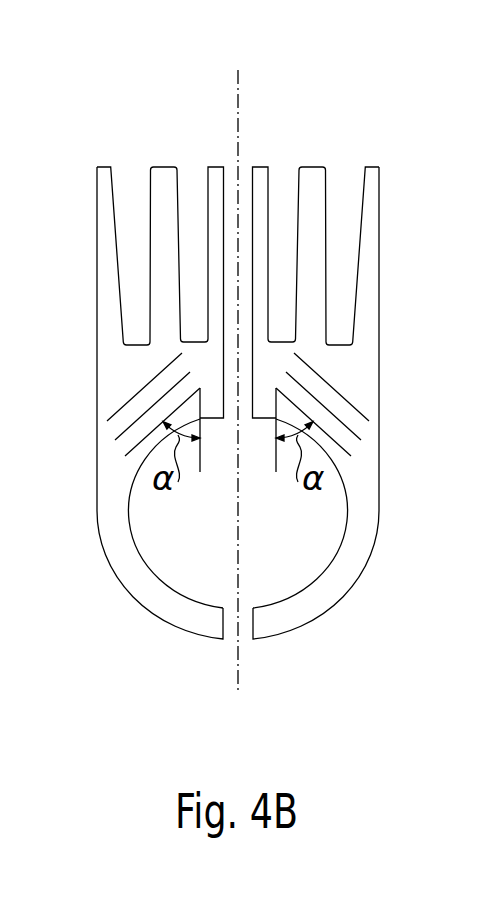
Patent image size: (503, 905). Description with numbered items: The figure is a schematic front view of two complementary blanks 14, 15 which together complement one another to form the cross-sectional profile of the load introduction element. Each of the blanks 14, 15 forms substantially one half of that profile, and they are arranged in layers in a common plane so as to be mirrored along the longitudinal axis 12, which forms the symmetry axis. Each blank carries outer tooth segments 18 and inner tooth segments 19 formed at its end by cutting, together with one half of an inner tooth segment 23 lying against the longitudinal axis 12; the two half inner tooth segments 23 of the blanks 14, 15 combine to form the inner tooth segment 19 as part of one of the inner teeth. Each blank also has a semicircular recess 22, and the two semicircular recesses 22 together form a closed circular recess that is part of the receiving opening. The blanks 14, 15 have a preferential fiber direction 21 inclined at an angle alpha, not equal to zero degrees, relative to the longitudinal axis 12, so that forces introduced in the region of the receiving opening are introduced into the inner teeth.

The longitudinal axis 12 is at (238, 78).
The complementary blank 14 is at (92, 575).
The complementary blank 15 is at (373, 612).
The outer tooth segment 18 is at (107, 183).
The inner tooth segment 19 is at (162, 183).
The preferential fiber direction 21 is at (134, 446).
The semicircular recess 22 is at (162, 518).
The half inner tooth segment 23 is at (219, 183).